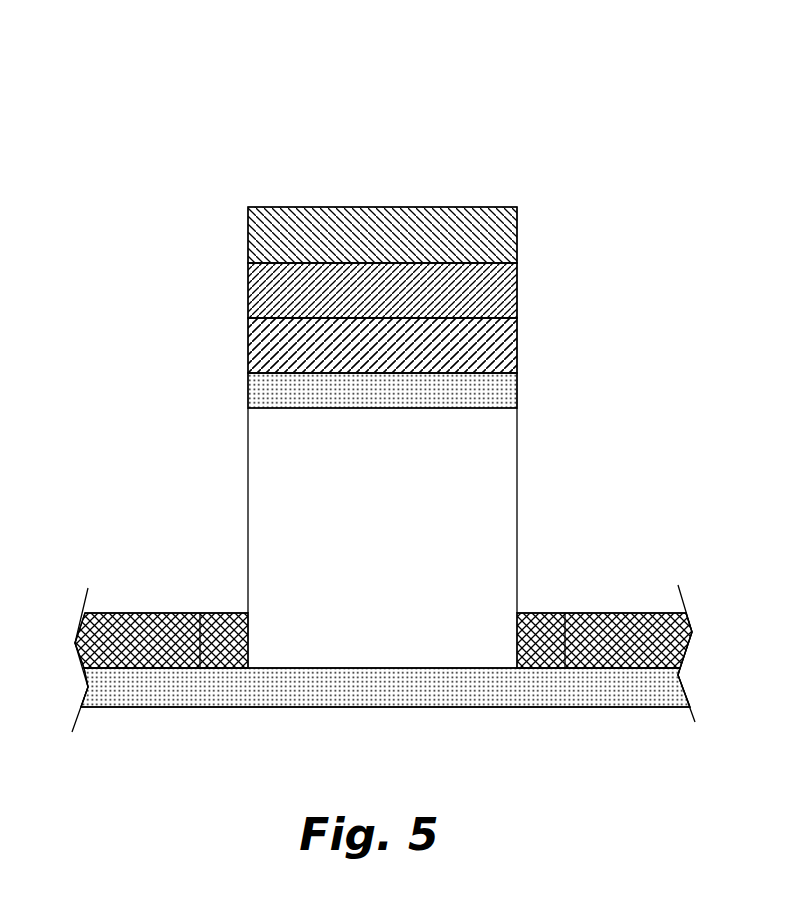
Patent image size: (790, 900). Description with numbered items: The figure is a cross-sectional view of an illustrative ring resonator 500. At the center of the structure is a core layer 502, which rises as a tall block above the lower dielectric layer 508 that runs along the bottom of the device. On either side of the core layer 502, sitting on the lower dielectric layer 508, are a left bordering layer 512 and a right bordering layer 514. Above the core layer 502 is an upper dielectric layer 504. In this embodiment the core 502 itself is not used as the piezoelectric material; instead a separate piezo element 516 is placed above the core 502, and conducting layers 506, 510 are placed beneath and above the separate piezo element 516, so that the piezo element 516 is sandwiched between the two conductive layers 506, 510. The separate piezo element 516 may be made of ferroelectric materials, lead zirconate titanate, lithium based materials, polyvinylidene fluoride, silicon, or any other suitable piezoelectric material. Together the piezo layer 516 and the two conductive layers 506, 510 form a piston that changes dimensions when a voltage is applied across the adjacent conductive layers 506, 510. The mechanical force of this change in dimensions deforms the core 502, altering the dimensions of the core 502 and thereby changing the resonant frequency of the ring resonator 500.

The ring resonator 500 is at (209, 92).
The core layer 502 is at (366, 558).
The upper dielectric layer 504 is at (368, 400).
The conducting layer 506 is at (368, 358).
The lower dielectric layer 508 is at (366, 696).
The conducting layer 510 is at (368, 245).
The left bordering layer 512 is at (118, 653).
The right bordering layer 514 is at (611, 653).
The separate piezo element 516 is at (368, 303).